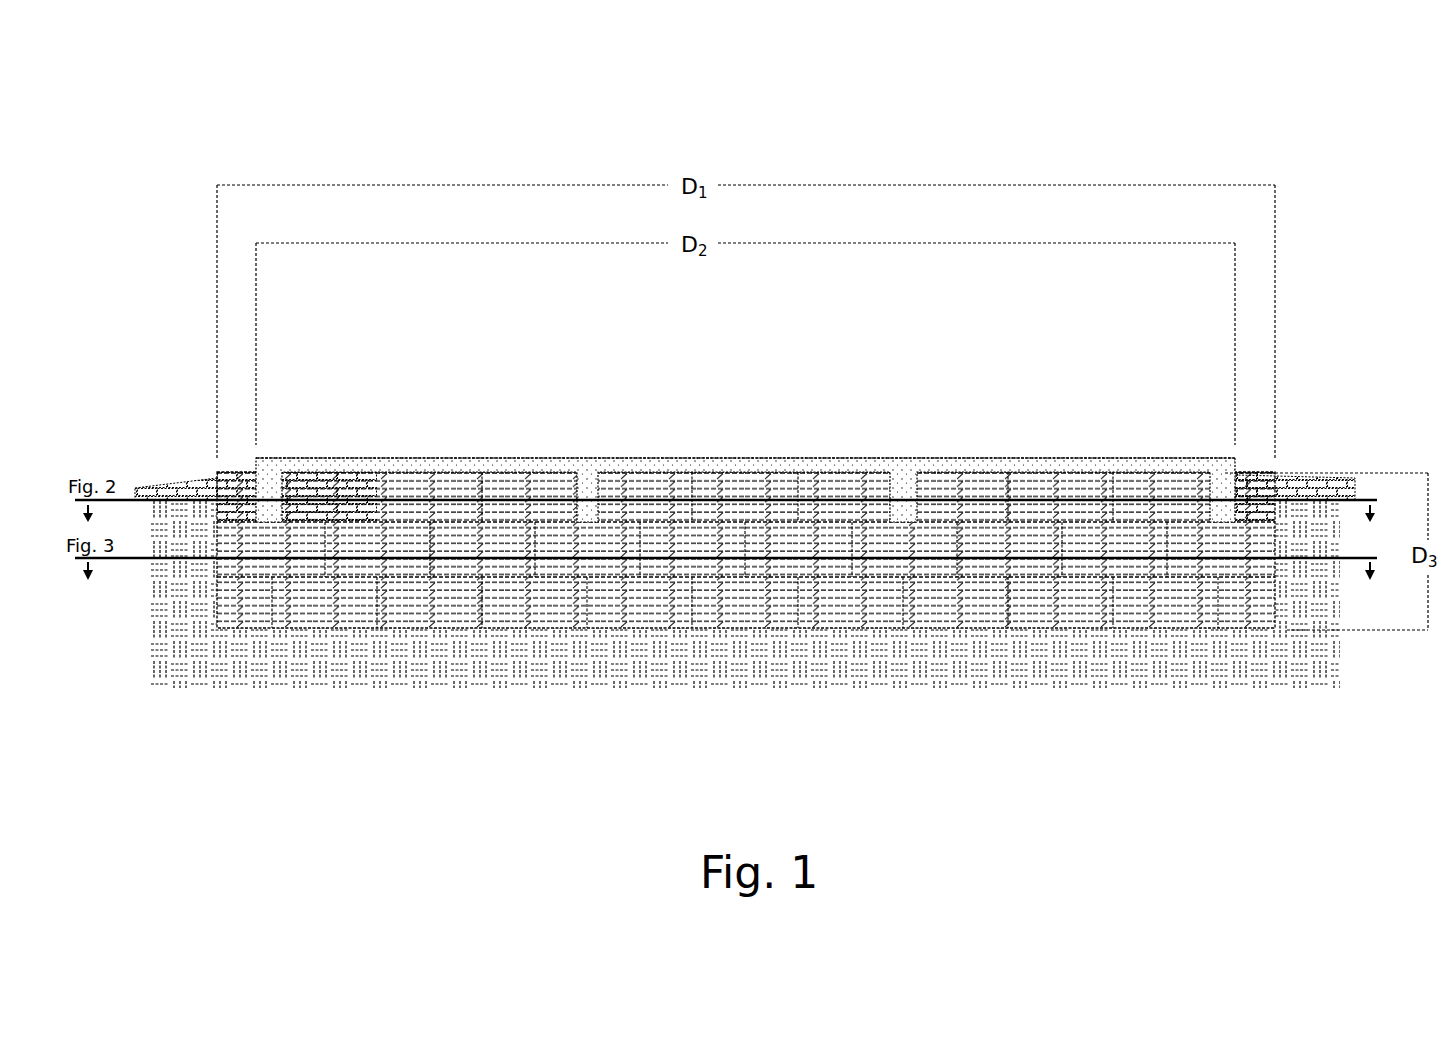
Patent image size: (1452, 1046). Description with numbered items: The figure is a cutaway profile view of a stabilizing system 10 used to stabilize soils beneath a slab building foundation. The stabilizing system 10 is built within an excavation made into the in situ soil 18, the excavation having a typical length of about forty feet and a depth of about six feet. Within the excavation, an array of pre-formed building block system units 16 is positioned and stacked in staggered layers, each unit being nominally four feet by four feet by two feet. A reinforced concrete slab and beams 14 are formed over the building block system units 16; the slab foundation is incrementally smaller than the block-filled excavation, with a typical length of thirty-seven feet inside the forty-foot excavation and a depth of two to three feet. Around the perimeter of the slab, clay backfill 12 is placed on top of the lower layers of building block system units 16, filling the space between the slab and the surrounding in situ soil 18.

The stabilizing system 10 is at (304, 127).
The clay backfill 12 is at (242, 473).
The reinforced concrete slab and beams 14 is at (745, 457).
The building block system units 16 is at (848, 470).
The in situ soil 18 is at (530, 665).